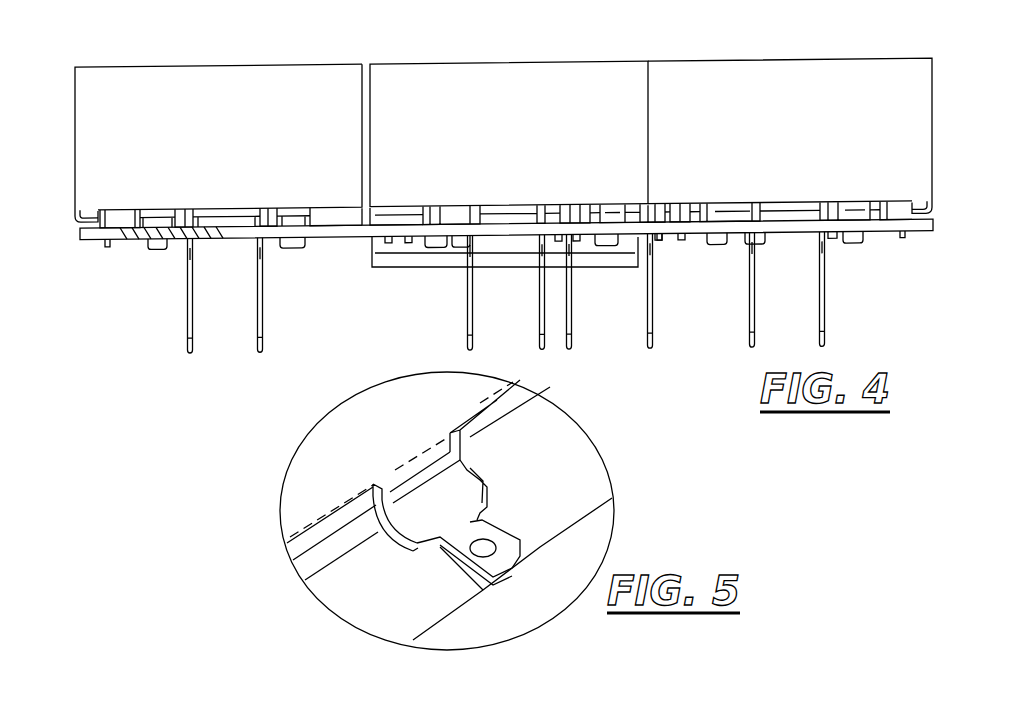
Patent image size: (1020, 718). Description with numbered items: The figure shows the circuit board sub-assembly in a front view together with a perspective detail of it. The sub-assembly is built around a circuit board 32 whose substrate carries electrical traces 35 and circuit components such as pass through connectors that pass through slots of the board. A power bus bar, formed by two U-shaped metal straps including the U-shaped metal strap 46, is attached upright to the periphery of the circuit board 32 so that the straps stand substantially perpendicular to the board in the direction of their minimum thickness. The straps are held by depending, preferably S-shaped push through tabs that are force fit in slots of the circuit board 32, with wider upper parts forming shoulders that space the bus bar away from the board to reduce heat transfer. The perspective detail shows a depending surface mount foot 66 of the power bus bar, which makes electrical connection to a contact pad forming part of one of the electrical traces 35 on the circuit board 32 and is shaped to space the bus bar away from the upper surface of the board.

In FIG. 5, the circuit board 32 is at (362, 590).
In FIG. 4, the electrical traces 35 is at (505, 252).
In FIG. 5, the electrical traces 35 is at (595, 540).
In FIG. 5, the U-shaped metal strap 46 is at (309, 469).
In FIG. 5, the surface mount feet 66 is at (483, 532).